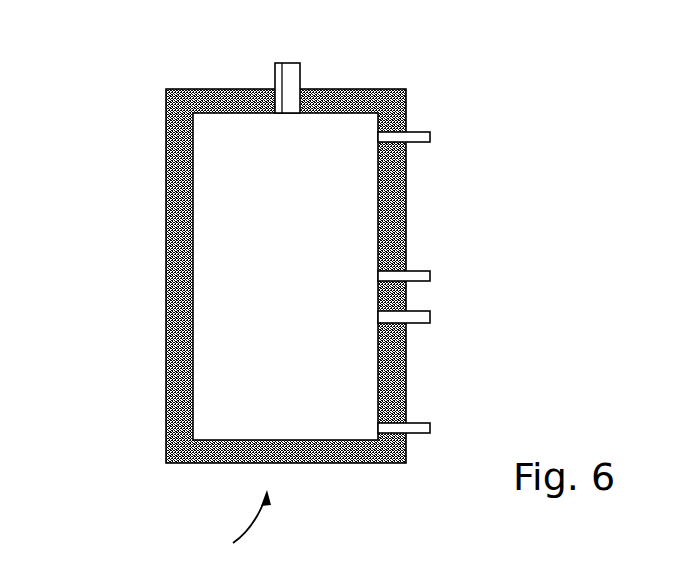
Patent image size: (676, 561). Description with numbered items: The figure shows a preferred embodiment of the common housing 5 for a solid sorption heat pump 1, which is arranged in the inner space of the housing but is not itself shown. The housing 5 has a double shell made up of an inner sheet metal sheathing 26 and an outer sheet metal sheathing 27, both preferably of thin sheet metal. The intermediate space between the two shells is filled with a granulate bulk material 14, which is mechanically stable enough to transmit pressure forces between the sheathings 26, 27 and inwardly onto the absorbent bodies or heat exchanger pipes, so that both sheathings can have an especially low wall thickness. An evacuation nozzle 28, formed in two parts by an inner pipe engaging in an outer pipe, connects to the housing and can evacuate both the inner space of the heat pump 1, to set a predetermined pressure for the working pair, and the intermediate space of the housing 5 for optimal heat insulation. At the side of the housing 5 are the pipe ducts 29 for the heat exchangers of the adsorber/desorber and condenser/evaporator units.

The solid sorption heat pump 1 is at (261, 249).
The granulate bulk material 14 is at (167, 272).
The outer sheet metal sheathing 27 is at (167, 363).
The evacuation nozzle 28 is at (287, 83).
The pipe ducts 29 is at (404, 268).
The inner sheet metal sheathing 26 is at (427, 350).
The common housing 5 is at (230, 525).